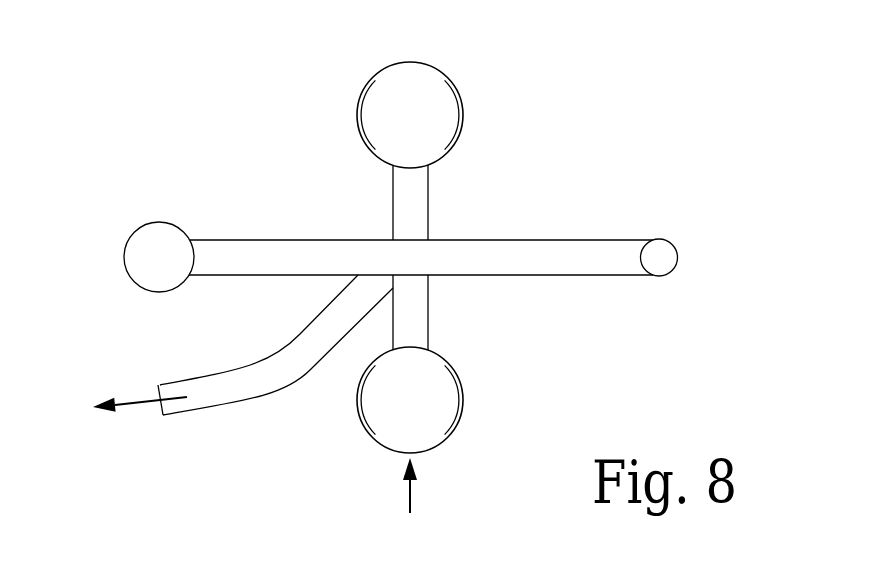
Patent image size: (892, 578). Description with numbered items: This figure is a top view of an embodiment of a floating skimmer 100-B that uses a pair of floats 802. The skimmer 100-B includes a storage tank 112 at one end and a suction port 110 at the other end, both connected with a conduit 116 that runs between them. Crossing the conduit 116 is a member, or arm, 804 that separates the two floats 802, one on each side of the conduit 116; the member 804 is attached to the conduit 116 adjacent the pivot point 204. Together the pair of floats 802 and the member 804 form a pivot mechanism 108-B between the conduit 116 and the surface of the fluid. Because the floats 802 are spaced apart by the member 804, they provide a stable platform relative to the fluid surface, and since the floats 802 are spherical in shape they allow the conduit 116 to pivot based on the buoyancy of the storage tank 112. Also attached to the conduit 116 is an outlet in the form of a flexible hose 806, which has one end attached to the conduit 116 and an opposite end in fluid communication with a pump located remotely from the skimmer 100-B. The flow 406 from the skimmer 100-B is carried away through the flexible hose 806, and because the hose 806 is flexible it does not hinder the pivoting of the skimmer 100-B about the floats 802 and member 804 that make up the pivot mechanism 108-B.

The floating skimmer 100-B is at (696, 83).
The conduit 116 is at (527, 239).
The pivot point 204 is at (412, 257).
The storage tank 112 is at (185, 225).
The suction port 110 is at (673, 243).
The member 804 is at (393, 193).
The floats 802 is at (462, 133).
The flexible hose 806 is at (230, 407).
The flow 406 is at (148, 402).
The pivot mechanism 108-B is at (408, 501).